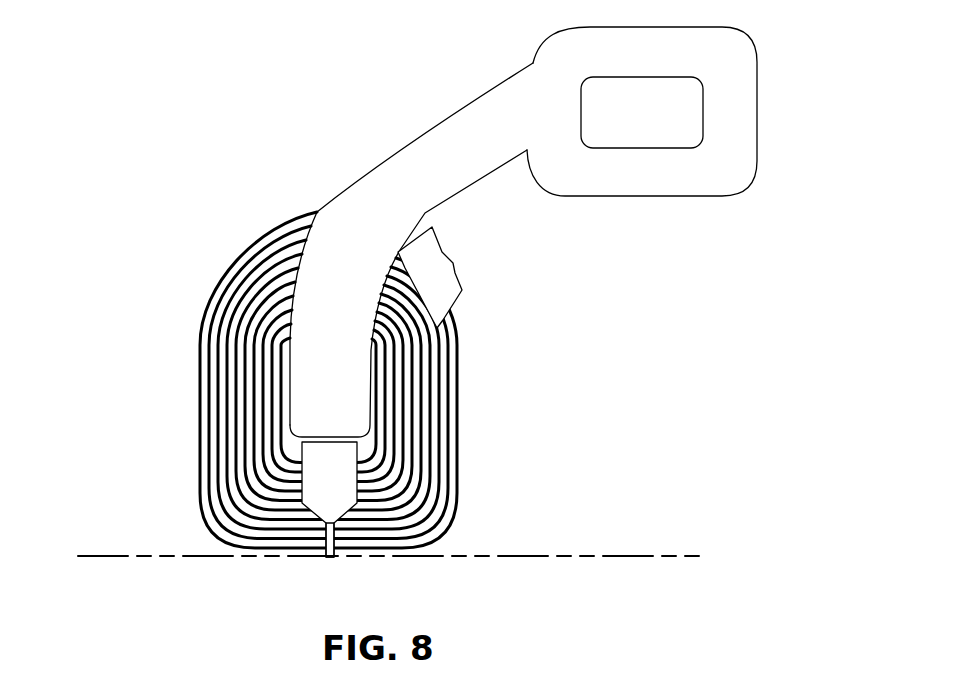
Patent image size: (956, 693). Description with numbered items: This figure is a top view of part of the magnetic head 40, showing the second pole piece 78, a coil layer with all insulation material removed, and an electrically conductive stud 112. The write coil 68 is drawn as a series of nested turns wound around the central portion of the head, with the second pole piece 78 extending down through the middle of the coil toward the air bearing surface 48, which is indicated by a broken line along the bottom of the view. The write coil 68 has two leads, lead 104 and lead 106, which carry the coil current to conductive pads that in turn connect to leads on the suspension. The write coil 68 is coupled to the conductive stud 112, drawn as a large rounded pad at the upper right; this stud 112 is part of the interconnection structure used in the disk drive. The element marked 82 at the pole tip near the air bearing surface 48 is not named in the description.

The magnetic head 40 is at (486, 268).
The air bearing surface (ABS) 48 is at (617, 559).
The write coil 68 is at (500, 387).
The second pole piece 78 is at (318, 488).
The pole tip 82 is at (329, 558).
The lead 104 is at (320, 318).
The lead 106 is at (442, 250).
The conductive stud 112 is at (685, 100).